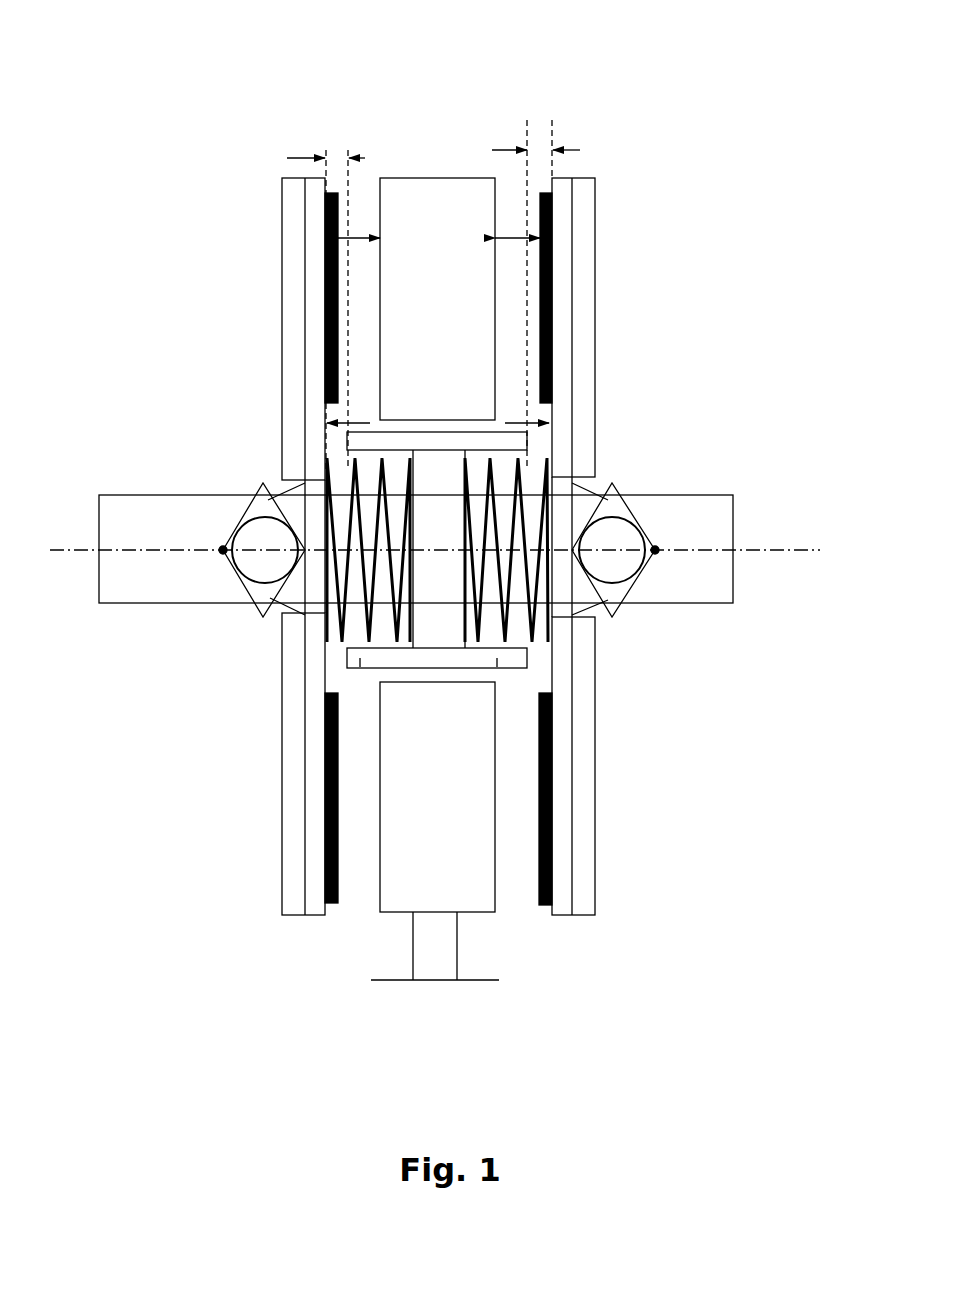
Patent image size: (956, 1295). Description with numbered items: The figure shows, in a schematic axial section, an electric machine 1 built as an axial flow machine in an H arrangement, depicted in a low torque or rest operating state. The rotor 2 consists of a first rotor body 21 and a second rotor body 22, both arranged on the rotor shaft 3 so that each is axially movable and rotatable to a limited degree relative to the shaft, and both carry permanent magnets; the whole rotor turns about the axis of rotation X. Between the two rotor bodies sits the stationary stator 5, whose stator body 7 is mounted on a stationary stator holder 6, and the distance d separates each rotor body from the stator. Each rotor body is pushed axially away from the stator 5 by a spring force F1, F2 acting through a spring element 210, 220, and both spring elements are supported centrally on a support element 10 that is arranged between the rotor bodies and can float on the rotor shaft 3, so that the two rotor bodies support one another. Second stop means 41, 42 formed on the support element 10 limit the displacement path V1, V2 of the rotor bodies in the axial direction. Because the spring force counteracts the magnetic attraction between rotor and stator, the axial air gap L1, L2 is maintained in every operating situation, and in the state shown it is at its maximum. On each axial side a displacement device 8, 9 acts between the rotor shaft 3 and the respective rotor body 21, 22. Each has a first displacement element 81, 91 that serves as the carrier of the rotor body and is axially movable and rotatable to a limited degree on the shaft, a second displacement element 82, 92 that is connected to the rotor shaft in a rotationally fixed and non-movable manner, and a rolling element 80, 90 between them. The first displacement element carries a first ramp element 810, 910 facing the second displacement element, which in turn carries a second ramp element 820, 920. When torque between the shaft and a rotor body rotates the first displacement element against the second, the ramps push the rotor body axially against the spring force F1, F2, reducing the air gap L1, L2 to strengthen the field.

The electric machine 1 is at (420, 113).
The rotor 2 is at (439, 492).
The first rotor body 21 is at (305, 298).
The second rotor body 22 is at (574, 340).
The rotor shaft 3 is at (673, 603).
The stator 5 is at (413, 193).
The stator holder 6 is at (421, 983).
The stator body 7 is at (380, 907).
The displacement device 8 is at (219, 478).
The rolling element 80 is at (250, 545).
The first displacement element 81 is at (230, 630).
The first ramp element 810 is at (273, 592).
The second displacement element 82 is at (219, 459).
The second ramp element 820 is at (238, 522).
The displacement device 9 is at (681, 491).
The rolling element 90 is at (617, 557).
The first displacement element 91 is at (669, 515).
The first ramp element 910 is at (615, 500).
The second displacement element 92 is at (681, 473).
The second ramp element 920 is at (640, 500).
The support element 10 is at (447, 670).
The spring element 210 is at (330, 633).
The spring element 220 is at (533, 638).
The second stop means 41 is at (338, 697).
The second stop means 42 is at (497, 667).
The axial air gap L1 is at (348, 880).
The axial air gap L2 is at (512, 880).
The displacement path V1 is at (326, 298).
The displacement path V2 is at (536, 287).
The distance d is at (439, 222).
The spring force F1 is at (351, 411).
The spring force F2 is at (527, 411).
The axis of rotation of the rotor X is at (182, 550).